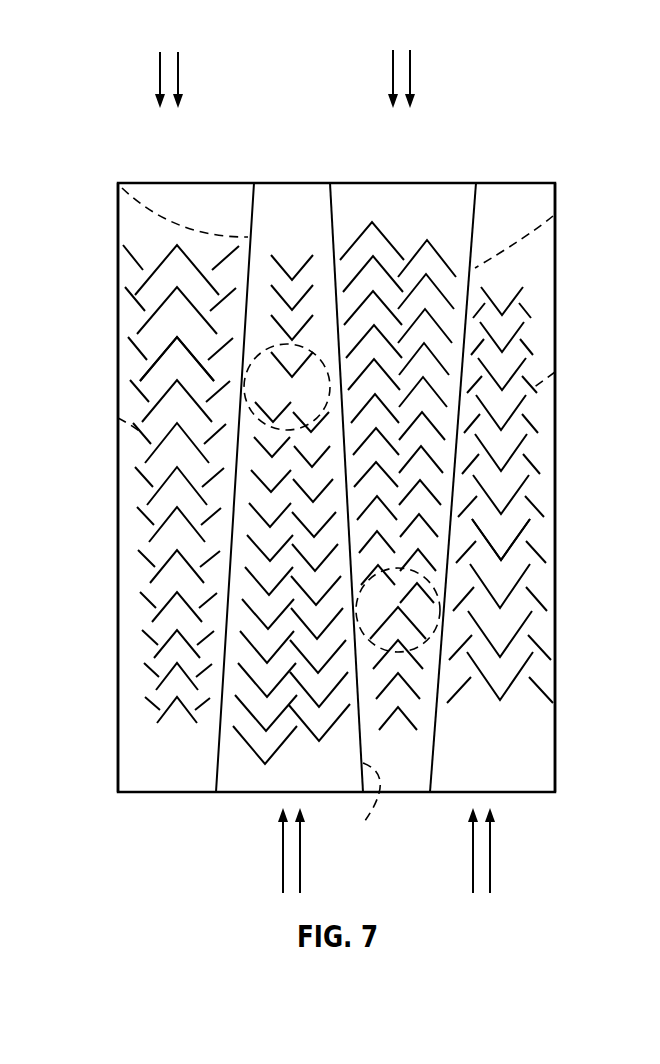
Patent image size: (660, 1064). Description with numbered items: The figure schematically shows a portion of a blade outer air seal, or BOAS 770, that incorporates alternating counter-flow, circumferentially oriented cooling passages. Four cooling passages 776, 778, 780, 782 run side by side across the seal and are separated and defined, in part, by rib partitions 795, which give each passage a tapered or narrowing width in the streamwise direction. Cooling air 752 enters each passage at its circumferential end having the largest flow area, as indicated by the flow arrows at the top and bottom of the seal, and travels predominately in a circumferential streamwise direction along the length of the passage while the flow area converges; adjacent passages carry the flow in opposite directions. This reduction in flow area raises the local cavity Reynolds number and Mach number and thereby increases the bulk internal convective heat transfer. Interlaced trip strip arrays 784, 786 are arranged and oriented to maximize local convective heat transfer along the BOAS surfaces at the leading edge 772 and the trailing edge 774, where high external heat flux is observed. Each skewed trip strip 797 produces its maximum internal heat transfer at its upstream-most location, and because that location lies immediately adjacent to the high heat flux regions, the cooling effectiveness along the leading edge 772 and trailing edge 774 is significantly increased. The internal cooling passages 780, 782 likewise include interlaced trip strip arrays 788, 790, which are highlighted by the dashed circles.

The cooling air 752 is at (178, 86).
The BOAS 770 is at (342, 182).
The leading edge 772 is at (118, 532).
The trailing edge 774 is at (555, 496).
The cooling passage 776 is at (168, 198).
The cooling passage 778 is at (528, 206).
The internal cooling passage 780 is at (290, 196).
The internal cooling passage 782 is at (436, 205).
The interlaced trip strip array 784 is at (136, 362).
The interlaced trip strip array 786 is at (548, 544).
The interlaced trip strip array 788 is at (245, 381).
The interlaced trip strip array 790 is at (440, 612).
The rib partition 795 is at (118, 182).
The skewed trip strip 797 is at (118, 418).